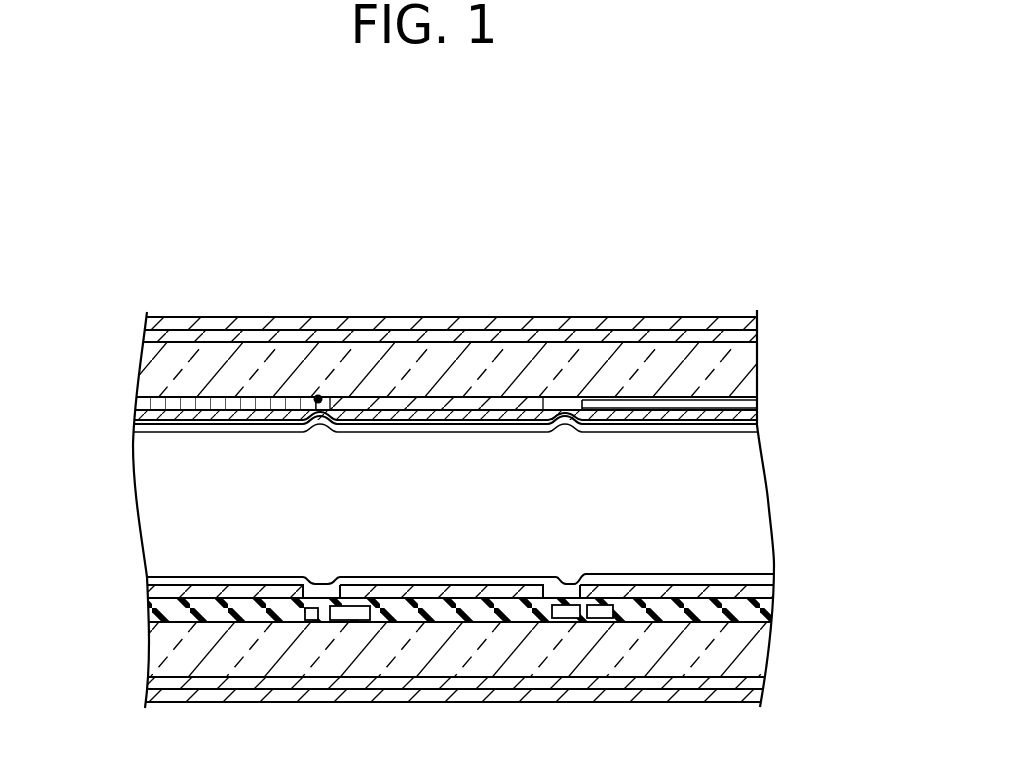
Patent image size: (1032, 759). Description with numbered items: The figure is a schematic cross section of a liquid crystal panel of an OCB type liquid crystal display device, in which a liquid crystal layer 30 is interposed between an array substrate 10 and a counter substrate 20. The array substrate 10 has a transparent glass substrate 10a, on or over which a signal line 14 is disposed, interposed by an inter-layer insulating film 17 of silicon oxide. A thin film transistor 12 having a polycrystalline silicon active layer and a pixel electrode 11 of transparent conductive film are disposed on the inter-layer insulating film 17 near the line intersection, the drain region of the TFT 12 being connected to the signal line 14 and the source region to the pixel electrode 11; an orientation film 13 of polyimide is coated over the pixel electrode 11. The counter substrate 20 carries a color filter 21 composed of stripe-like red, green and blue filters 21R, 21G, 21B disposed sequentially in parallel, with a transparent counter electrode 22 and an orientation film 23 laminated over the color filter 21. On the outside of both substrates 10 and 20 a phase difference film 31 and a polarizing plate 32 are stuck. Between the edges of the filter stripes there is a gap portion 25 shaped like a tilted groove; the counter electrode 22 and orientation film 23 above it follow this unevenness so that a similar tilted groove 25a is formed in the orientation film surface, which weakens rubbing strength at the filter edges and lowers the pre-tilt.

The array substrate 10 is at (128, 650).
The transparent glass substrate 10a is at (776, 648).
The pixel electrode 11 is at (778, 590).
The thin film transistor 12 is at (597, 603).
The orientation film 13 is at (669, 578).
The signal line 14 is at (560, 598).
The inter-layer insulating film 17 is at (768, 608).
The counter substrate 20 is at (758, 378).
The color filter 21 is at (232, 242).
The red color filter 21R is at (265, 397).
The green color filter 21G is at (446, 397).
The blue color filter 21B is at (627, 397).
The transparent counter electrode 22 is at (758, 418).
The orientation film 23 is at (758, 430).
The gap portion 25 is at (322, 402).
The tilted groove 25a is at (322, 434).
The liquid crystal layer 30 is at (172, 507).
The phase difference film 31 is at (758, 338).
The polarizing plate 32 is at (758, 322).